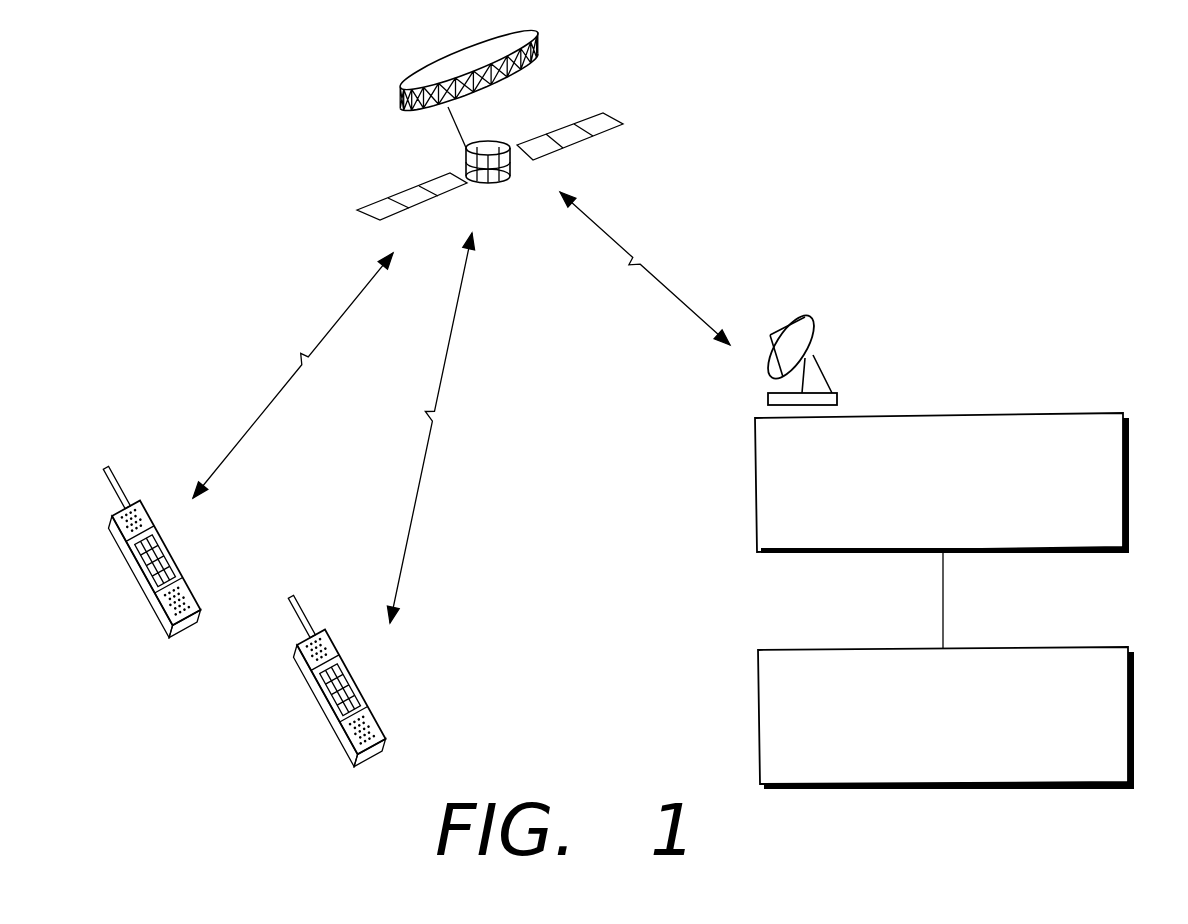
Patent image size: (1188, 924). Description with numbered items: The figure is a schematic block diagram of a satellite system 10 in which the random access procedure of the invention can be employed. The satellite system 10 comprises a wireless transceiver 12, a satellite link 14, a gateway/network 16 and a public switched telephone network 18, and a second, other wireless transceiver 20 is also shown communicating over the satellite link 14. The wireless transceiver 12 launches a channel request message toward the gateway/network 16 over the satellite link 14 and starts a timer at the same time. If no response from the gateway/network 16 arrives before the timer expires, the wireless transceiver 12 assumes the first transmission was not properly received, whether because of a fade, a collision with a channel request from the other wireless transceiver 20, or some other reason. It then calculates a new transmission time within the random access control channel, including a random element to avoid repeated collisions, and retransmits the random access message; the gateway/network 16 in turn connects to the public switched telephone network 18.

The satellite system 10 is at (908, 158).
The wireless transceiver 12 is at (316, 702).
The satellite link 14 is at (420, 75).
The gateway/network 16 is at (1073, 412).
The public switched telephone network 18 is at (843, 648).
The another wireless transceiver 20 is at (132, 572).